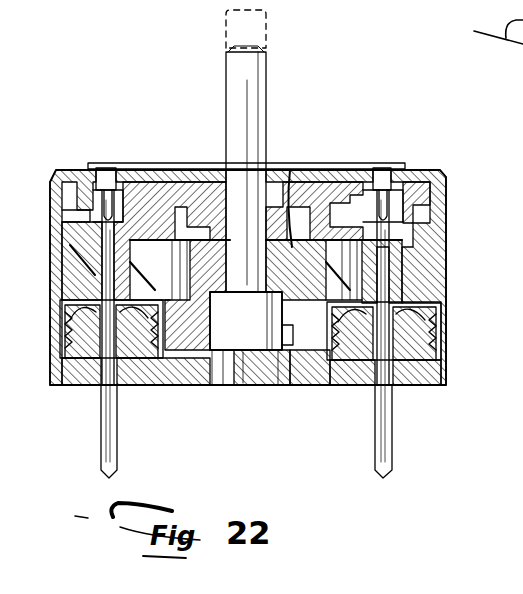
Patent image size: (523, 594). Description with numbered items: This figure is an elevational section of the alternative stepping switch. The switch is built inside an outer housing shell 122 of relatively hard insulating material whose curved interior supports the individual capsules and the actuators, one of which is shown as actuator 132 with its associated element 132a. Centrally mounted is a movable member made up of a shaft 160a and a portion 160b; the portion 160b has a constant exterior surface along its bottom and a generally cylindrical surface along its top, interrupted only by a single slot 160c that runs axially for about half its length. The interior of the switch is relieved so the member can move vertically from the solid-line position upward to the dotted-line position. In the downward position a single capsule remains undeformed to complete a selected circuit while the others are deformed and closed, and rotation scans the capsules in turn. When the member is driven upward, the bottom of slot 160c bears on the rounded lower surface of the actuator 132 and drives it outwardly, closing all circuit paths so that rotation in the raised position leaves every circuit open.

The outer housing shell 122 is at (440, 293).
The actuator 132 is at (366, 256).
The terminal socket 132a is at (326, 293).
The shaft 160a is at (237, 144).
The portion 160b is at (291, 166).
The slot 160c is at (170, 298).